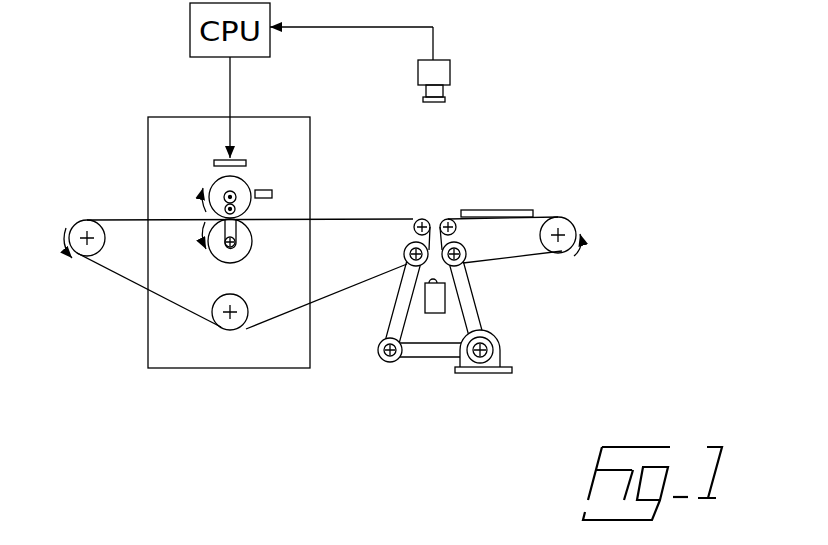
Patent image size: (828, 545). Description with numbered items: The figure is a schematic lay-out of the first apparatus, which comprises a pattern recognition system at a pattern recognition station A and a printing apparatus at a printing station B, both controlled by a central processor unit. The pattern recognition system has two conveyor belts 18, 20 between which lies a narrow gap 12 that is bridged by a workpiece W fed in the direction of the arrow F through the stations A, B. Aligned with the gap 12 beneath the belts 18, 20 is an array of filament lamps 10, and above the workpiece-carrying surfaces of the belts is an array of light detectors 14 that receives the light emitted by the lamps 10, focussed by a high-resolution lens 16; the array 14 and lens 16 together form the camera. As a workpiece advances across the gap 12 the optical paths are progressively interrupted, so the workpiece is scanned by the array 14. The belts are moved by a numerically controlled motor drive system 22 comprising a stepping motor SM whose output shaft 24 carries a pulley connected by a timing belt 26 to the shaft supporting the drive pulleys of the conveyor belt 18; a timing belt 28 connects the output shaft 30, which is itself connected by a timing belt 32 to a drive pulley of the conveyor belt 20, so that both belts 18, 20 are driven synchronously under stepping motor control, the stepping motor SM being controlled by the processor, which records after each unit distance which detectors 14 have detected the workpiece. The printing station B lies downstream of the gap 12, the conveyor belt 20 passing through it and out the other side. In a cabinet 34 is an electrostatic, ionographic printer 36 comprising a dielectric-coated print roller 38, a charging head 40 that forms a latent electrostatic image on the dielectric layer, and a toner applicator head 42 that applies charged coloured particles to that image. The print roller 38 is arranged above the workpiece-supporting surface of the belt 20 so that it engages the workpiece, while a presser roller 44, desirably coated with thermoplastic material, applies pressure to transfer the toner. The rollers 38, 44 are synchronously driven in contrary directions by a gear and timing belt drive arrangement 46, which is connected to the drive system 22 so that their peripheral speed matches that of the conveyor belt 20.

The pattern recognition station A is at (575, 140).
The printing station B is at (122, 70).
The array of filament lamps 10 is at (440, 293).
The gap 12 is at (433, 207).
The array of light detectors 14 is at (440, 70).
The high-resolution lens 16 is at (440, 102).
The conveyor belt 18 is at (540, 258).
The conveyor belt 20 is at (355, 218).
The numerically controlled motor drive system 22 is at (528, 342).
The output shaft 24 is at (490, 358).
The timing belt 26 is at (487, 318).
The timing belt 28 is at (437, 358).
The output shaft 30 is at (382, 362).
The timing belt 32 is at (392, 305).
The cabinet 34 is at (181, 355).
The printer 36 is at (260, 173).
The print roller 38 is at (217, 184).
The charging head 40 is at (222, 158).
The toner applicator head 42 is at (273, 199).
The presser roller 44 is at (217, 253).
The gear and timing belt drive arrangement 46 is at (247, 254).
The feed direction arrow F is at (443, 178).
The workpiece W is at (531, 211).
The stepping motor SM is at (503, 357).